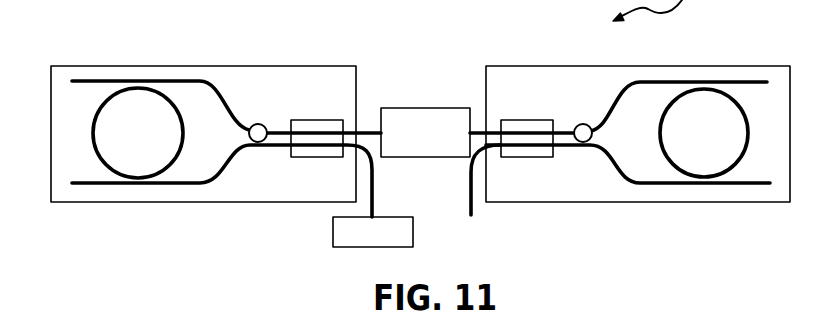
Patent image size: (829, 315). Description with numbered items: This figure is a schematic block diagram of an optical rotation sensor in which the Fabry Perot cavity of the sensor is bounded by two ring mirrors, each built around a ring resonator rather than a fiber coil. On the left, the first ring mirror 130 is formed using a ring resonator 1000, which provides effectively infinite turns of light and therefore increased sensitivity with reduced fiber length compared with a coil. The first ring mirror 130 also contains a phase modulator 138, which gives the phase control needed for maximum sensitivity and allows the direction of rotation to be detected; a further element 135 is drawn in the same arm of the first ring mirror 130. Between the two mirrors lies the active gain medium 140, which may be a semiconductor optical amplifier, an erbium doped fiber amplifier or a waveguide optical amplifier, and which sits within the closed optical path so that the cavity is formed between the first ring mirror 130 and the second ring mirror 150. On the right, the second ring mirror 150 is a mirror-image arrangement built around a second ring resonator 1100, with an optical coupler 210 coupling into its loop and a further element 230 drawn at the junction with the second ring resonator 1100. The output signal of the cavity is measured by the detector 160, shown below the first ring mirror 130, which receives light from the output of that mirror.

The ring resonator 1000 is at (95, 115).
The ring mirror 130 is at (216, 122).
The phase modulator 138 is at (259, 123).
The first modulator 135 is at (318, 120).
The active gain medium 140 is at (435, 108).
The detector 160 is at (414, 240).
The ring mirror 150 is at (630, 123).
The optical coupler 210 is at (529, 120).
The second coupler 230 is at (582, 124).
The ring resonator 1100 is at (745, 112).